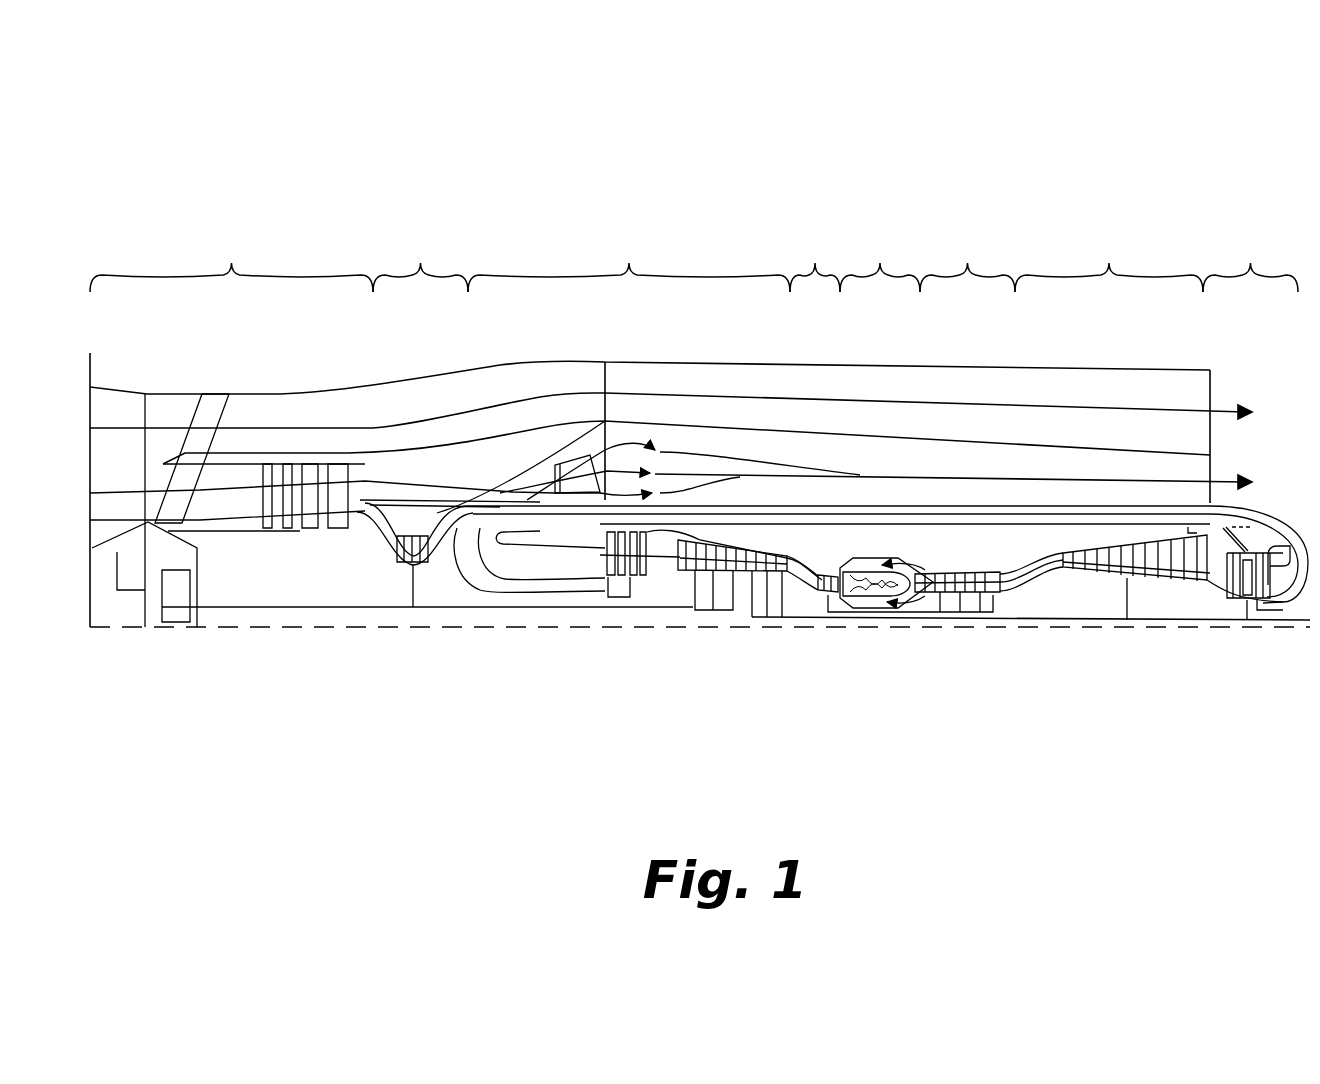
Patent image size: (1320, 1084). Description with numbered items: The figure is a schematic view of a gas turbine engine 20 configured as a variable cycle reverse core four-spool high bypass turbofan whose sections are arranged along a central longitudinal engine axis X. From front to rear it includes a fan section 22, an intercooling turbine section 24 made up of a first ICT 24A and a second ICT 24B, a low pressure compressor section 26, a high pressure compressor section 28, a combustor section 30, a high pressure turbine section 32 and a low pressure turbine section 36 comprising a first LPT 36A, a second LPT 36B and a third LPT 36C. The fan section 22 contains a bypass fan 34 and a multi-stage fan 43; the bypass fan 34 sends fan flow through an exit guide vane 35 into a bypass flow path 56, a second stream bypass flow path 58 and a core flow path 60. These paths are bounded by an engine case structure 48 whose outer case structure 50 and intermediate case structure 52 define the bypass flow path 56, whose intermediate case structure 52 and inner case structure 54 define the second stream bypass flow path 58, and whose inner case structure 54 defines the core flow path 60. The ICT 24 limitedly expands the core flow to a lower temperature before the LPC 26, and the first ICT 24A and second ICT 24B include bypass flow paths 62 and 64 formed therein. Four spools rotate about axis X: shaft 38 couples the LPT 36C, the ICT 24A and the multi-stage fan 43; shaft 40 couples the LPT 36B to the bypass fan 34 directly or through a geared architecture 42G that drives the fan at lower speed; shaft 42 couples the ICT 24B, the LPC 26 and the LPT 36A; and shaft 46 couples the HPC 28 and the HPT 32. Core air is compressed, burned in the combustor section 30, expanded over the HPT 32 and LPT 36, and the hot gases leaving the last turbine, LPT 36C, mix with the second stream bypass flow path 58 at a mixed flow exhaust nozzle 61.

The gas turbine engine 20 is at (1124, 122).
The fan section 22 is at (227, 382).
The intercooling turbine section 24 is at (835, 249).
The first intercooling turbine 24A is at (376, 554).
The second intercooling turbine 24B is at (1212, 597).
The low pressure compressor section 26 is at (1100, 582).
The high pressure compressor section 28 is at (968, 570).
The combustor section 30 is at (908, 551).
The high pressure turbine section 32 is at (824, 560).
The bypass fan 34 is at (100, 475).
The exit guide vane 35 is at (207, 413).
The low pressure turbine section 36 is at (629, 249).
The first low pressure turbine 36A is at (794, 590).
The second low pressure turbine 36B is at (727, 612).
The third low pressure turbine 36C is at (645, 587).
The shaft 38 is at (465, 597).
The shaft 40 is at (612, 610).
The shaft 42 is at (768, 600).
The geared architecture 42G is at (167, 614).
The multi-stage fan 43 is at (348, 425).
The shaft 46 is at (972, 613).
The engine case structure 48 is at (714, 345).
The outer case structure 50 is at (652, 360).
The intermediate case structure 52 is at (822, 428).
The inner case structure 54 is at (850, 504).
The bypass flow path 56 is at (997, 403).
The second stream bypass flow path 58 is at (931, 472).
The core flow path 60 is at (968, 511).
The mixed flow exhaust nozzle 61 is at (657, 467).
The bypass flow path 62 is at (440, 522).
The bypass flow path 64 is at (1243, 548).
The central longitudinal engine axis X is at (1250, 627).